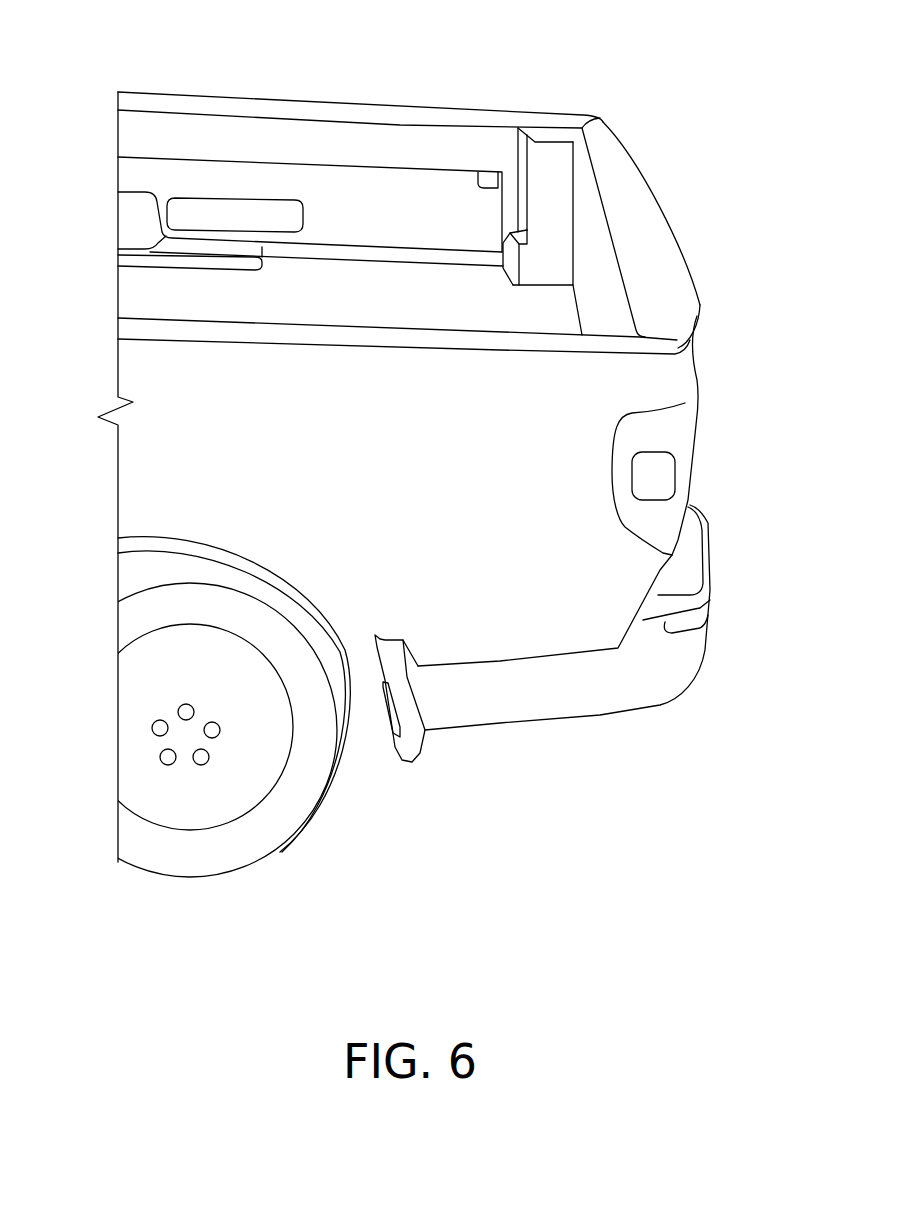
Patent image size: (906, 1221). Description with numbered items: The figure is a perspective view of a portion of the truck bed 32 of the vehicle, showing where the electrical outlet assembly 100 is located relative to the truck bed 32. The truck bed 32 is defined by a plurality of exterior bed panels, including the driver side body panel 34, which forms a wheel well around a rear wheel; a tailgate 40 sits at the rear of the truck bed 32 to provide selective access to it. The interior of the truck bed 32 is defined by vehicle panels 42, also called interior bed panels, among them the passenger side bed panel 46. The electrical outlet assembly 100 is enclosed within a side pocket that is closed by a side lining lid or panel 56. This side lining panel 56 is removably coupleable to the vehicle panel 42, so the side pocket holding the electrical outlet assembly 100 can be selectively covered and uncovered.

The truck bed 32 is at (612, 168).
The driver side body panel 34 is at (180, 483).
The tailgate 40 is at (660, 248).
The vehicle panels 42 is at (266, 197).
The passenger side bed panel 46 is at (360, 205).
The side lining panel 56 is at (420, 215).
The electrical outlet assembly 100 is at (477, 158).